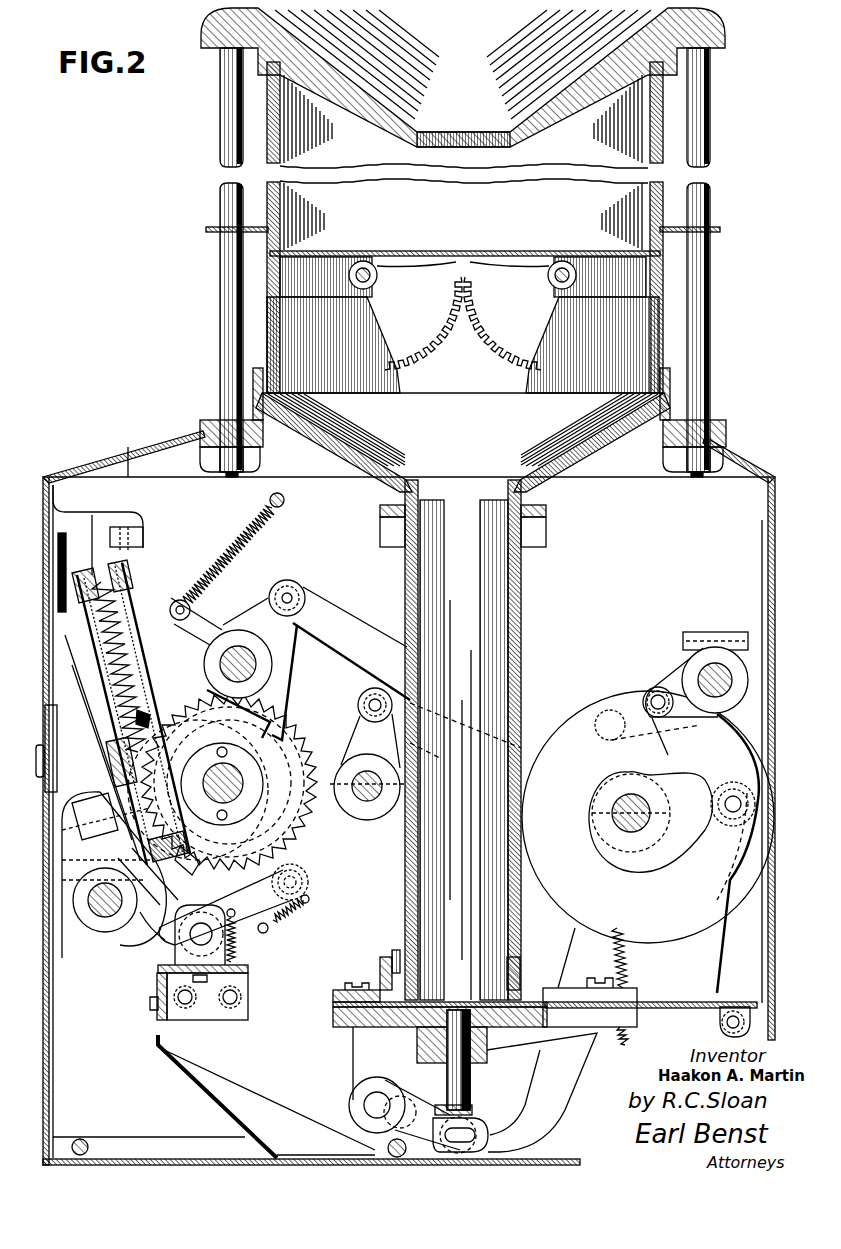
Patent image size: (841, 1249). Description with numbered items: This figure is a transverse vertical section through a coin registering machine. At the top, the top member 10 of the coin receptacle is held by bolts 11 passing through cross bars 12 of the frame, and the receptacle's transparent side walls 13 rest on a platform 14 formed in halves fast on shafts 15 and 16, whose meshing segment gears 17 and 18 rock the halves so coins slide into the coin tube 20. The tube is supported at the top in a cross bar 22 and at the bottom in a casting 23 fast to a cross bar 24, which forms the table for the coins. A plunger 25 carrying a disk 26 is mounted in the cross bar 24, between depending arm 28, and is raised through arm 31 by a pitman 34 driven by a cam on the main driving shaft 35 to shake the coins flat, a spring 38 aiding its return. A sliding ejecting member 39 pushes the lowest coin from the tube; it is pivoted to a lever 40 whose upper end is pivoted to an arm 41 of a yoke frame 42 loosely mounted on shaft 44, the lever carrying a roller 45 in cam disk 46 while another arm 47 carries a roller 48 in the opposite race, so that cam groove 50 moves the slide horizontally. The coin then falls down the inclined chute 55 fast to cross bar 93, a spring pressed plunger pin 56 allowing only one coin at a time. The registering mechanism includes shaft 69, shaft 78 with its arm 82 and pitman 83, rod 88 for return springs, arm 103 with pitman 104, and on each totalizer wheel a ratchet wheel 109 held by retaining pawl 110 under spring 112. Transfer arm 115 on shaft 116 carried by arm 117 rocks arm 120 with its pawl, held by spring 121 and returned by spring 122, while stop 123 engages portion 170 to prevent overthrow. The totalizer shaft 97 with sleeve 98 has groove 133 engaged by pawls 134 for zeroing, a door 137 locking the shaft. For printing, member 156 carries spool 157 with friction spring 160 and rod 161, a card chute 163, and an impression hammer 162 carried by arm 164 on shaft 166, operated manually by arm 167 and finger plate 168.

The top member 10 is at (403, 98).
The bolts 11 is at (227, 122).
The cross bars 12 is at (258, 433).
The side walls 13 is at (664, 190).
The platform 14 is at (430, 253).
The shaft 15 is at (553, 280).
The shaft 16 is at (370, 280).
The segment gear 17 is at (497, 345).
The segment gear 18 is at (435, 325).
The coin tube 20 is at (490, 590).
The cross bar 22 is at (538, 510).
The casting 23 is at (520, 960).
The cross bar 24 is at (432, 1055).
The plunger 25 is at (470, 1082).
The disk 26 is at (440, 1010).
The depending arm 28 is at (358, 1056).
The arm 31 is at (413, 1153).
The pitman 34 is at (563, 1100).
The main driving shaft 35 is at (647, 827).
The spring 38 is at (623, 977).
The sliding ejecting member 39 is at (667, 1008).
The lever 40 is at (720, 938).
The arm 41 is at (677, 670).
The yoke frame 42 is at (712, 635).
The shaft 44 is at (723, 687).
The roller 45 is at (740, 817).
The cam disk 46 is at (567, 717).
The arm 47 is at (625, 693).
The roller 48 is at (612, 710).
The cam groove 50 is at (583, 870).
The inclined chute 55 is at (237, 1092).
The spring pressed plunger pin 56 is at (383, 975).
The shaft 69 is at (227, 650).
The shaft 78 is at (362, 803).
The arm 82 is at (357, 727).
The pitman 83 is at (513, 747).
The rod 88 is at (284, 500).
The cross bar 93 is at (212, 1012).
The shaft 97 is at (223, 800).
The sleeve 98 is at (233, 782).
The arm 103 is at (260, 607).
The pitman 104 is at (332, 613).
The ratchet wheel 109 is at (297, 824).
The retaining pawl 110 is at (268, 688).
The spring 112 is at (262, 523).
The arm 115 is at (128, 902).
The shaft 116 is at (190, 943).
The arm 117 is at (173, 963).
The arm 120 is at (265, 931).
The spring 121 is at (287, 917).
The spring 122 is at (238, 953).
The overthrow preventing stop 123 is at (193, 858).
The groove 133 is at (235, 768).
The spring pressed pawl 134 is at (231, 820).
The door 137 is at (68, 462).
The member 156 is at (146, 931).
The spool 157 is at (130, 647).
The coiled friction spring 160 is at (132, 610).
The rod 161 is at (125, 627).
The impression hammer 162 is at (85, 800).
The chute 163 is at (90, 633).
The arm 164 is at (100, 915).
The shaft 166 is at (130, 950).
The arm 167 is at (75, 677).
The finger plate 168 is at (63, 560).
The portion 170 is at (240, 887).